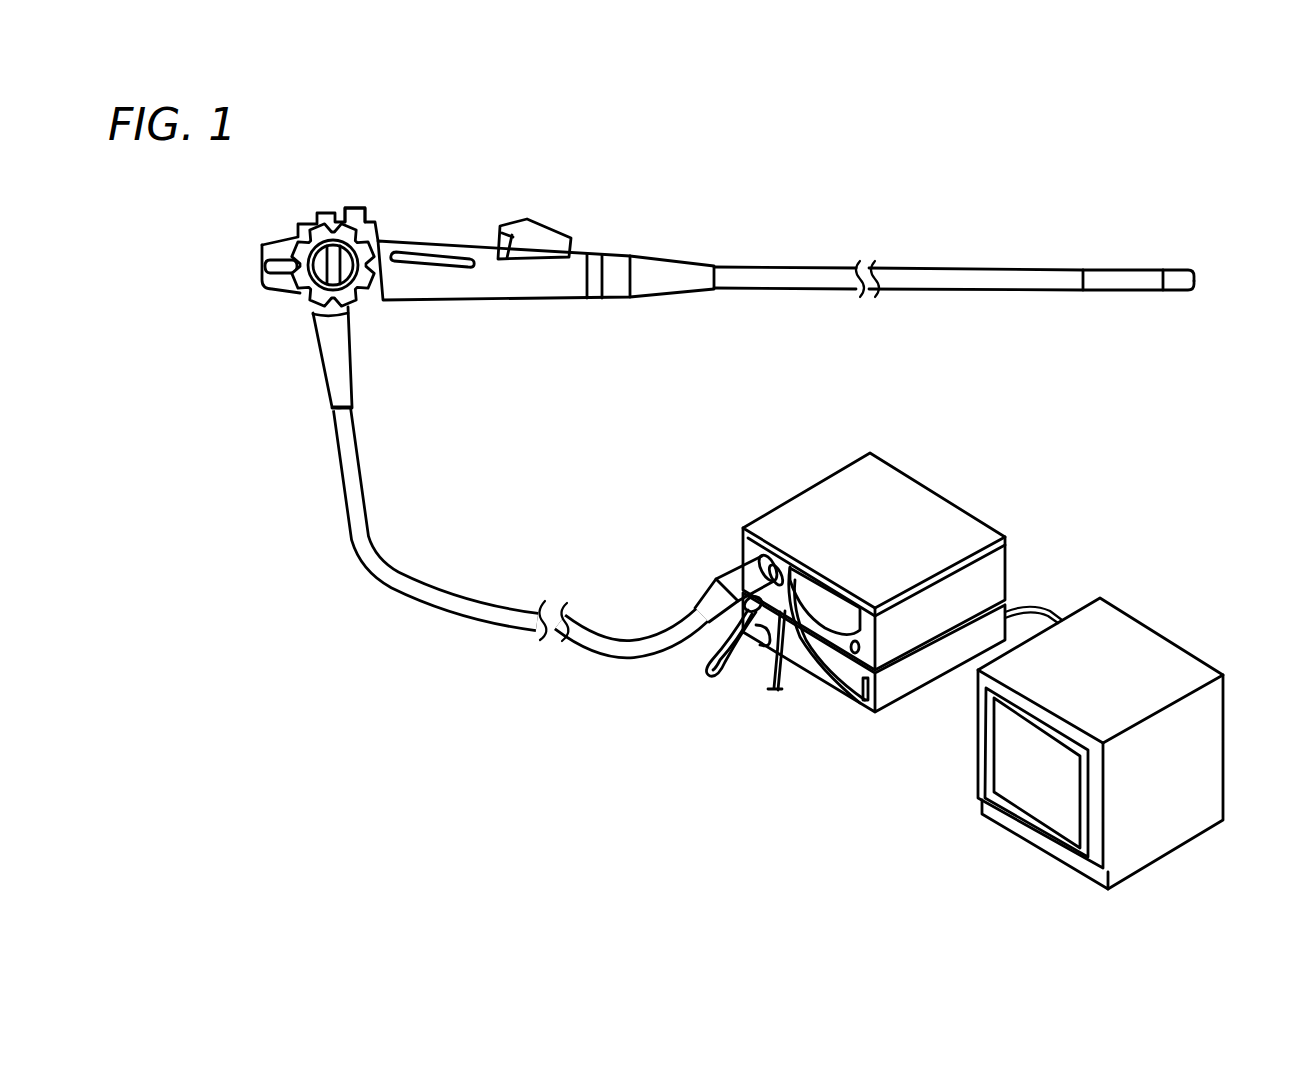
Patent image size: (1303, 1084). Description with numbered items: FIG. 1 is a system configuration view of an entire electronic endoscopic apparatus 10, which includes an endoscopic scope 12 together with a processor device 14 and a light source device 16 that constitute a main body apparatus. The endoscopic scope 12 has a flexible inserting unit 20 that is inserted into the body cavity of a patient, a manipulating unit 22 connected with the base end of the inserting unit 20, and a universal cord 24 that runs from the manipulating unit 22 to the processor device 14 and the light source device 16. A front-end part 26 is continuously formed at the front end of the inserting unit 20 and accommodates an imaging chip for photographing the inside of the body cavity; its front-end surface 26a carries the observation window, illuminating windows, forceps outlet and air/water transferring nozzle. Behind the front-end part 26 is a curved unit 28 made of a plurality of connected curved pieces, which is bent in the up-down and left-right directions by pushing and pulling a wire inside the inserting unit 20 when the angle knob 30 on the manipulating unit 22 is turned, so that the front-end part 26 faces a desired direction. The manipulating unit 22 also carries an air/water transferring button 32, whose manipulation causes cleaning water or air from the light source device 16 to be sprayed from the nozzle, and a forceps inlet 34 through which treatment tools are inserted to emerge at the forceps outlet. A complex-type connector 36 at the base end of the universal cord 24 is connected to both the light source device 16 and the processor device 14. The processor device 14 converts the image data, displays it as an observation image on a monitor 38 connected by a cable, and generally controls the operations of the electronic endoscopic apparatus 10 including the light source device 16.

The electronic endoscopic apparatus 10 is at (382, 718).
The endoscopic scope 12 is at (735, 242).
The processor device 14 is at (908, 690).
The light source device 16 is at (905, 492).
The inserting unit 20 is at (977, 272).
The manipulating unit 22 is at (447, 299).
The universal cord 24 is at (352, 450).
The front-end part 26 is at (1177, 268).
The front-end surface 26a is at (1194, 281).
The curved unit 28 is at (1114, 270).
The angle knob 30 is at (338, 212).
The air/water transferring button 32 is at (368, 211).
The forceps inlet 34 is at (503, 227).
The connector 36 is at (742, 582).
The monitor 38 is at (1147, 640).